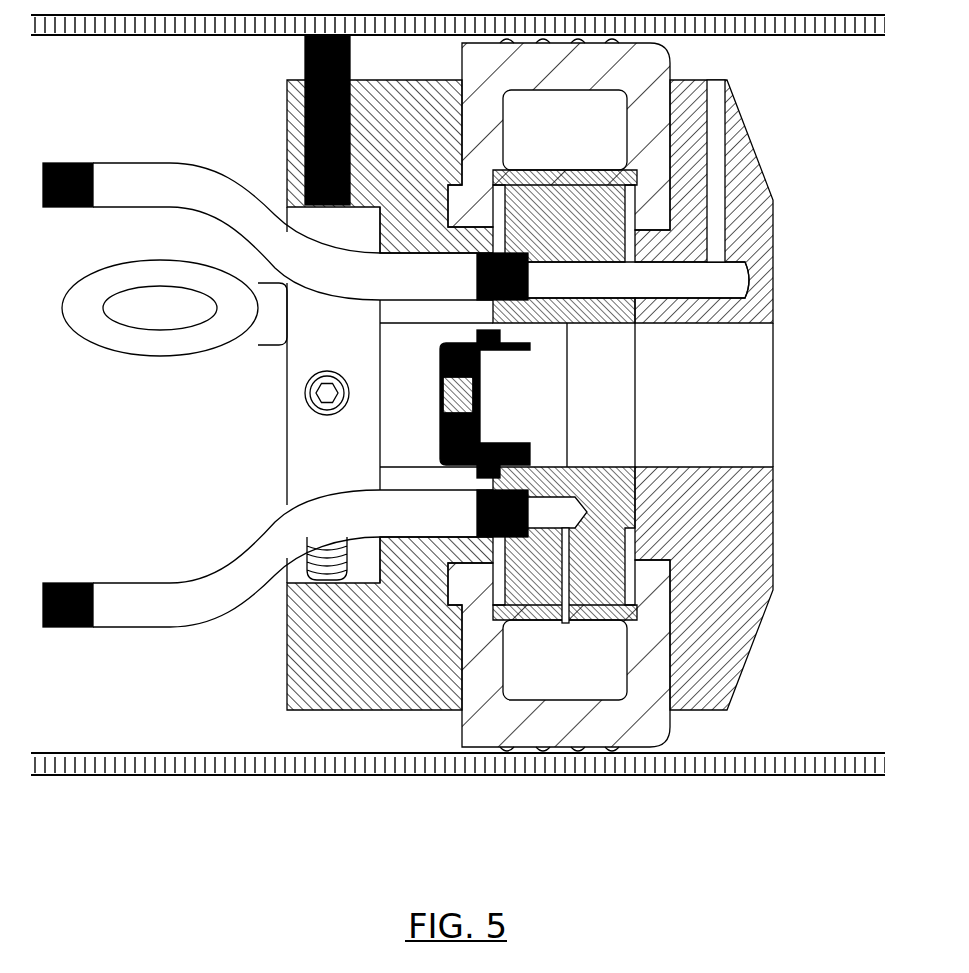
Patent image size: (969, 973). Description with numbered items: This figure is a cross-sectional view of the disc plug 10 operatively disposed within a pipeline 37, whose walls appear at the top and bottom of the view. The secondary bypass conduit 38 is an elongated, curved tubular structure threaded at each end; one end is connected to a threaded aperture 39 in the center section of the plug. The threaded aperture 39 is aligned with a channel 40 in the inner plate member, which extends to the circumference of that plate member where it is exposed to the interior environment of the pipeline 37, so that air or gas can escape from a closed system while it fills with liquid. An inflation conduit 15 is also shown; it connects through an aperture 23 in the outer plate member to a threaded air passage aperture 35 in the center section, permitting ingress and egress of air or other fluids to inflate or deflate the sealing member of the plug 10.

The disc plug 10 is at (238, 663).
The inflation conduit 15 is at (132, 597).
The aperture 23 is at (441, 478).
The threaded air passage aperture 35 is at (548, 585).
The pipeline 37 is at (768, 37).
The secondary bypass conduit 38 is at (168, 184).
The threaded aperture 39 is at (583, 277).
The channel 40 is at (713, 170).